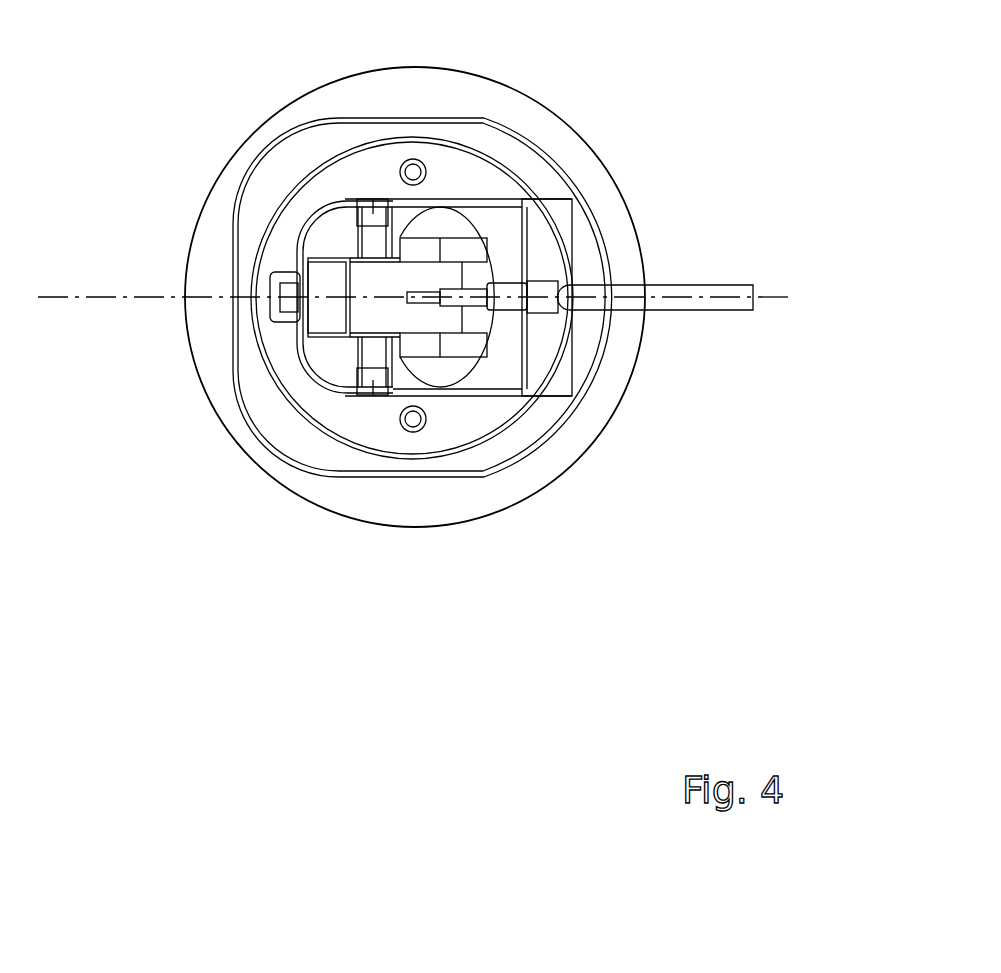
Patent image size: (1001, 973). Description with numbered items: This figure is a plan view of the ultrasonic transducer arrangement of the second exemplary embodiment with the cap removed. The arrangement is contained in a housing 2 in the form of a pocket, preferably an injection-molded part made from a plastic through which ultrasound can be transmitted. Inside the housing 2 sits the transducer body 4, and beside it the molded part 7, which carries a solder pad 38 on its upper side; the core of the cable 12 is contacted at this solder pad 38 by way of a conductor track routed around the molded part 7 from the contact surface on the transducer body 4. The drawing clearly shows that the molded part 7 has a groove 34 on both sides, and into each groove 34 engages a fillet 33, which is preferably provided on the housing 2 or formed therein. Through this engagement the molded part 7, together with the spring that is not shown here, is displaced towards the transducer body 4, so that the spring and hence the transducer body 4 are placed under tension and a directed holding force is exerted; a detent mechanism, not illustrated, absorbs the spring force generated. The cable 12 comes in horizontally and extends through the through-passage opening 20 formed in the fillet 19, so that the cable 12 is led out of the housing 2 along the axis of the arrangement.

The housing 2 is at (493, 183).
The transducer body 4 is at (453, 222).
The molded part 7 is at (335, 363).
The cable 12 is at (712, 290).
The fillet 19 is at (587, 350).
The through-passage opening 20 is at (584, 280).
The fillet 33 is at (374, 200).
The groove 34 is at (357, 252).
The solder pad 38 is at (450, 380).